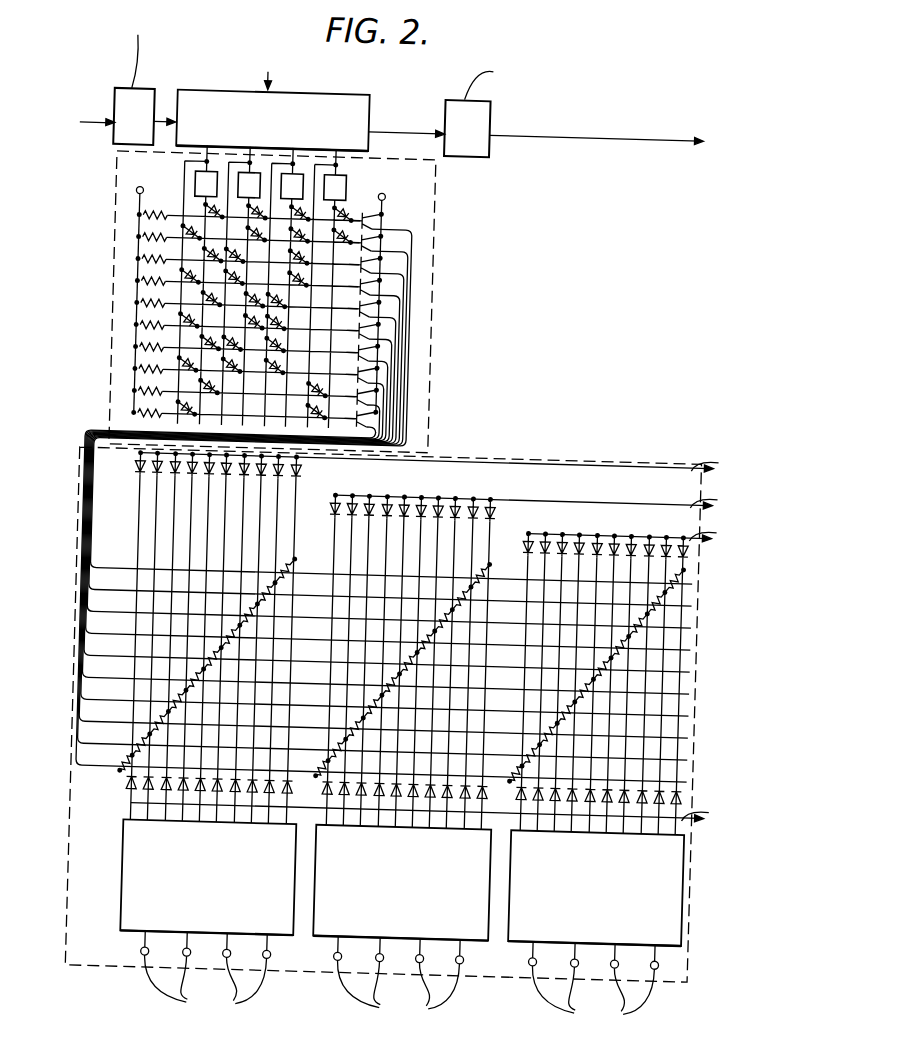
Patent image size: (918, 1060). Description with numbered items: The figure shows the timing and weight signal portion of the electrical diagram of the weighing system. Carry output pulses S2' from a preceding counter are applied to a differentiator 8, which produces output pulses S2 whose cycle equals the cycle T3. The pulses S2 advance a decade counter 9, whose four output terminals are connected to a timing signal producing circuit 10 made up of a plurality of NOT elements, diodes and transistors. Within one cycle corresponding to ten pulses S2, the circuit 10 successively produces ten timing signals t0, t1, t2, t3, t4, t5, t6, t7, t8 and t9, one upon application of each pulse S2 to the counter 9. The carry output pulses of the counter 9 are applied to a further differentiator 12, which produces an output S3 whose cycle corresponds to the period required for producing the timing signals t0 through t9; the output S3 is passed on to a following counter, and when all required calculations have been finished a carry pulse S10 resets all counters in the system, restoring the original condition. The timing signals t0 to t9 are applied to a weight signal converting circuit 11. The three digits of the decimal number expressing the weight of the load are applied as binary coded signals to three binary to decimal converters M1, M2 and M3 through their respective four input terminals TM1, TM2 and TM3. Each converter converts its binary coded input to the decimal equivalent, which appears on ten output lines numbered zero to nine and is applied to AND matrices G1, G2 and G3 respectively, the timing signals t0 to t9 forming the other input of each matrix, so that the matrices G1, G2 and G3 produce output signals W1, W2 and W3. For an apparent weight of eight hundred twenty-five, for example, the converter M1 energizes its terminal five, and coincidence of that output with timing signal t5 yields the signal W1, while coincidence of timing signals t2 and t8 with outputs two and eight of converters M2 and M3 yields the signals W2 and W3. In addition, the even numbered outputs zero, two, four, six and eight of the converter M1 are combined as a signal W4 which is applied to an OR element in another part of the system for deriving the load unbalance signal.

The differentiator 8 is at (102, 152).
The decade counter 9 is at (352, 95).
The timing signal producing circuit 10 is at (417, 205).
The weight signal converting circuit 11 is at (109, 976).
The differentiator 12 is at (470, 155).
The output pulses S2 is at (167, 97).
The carry output pulses S2' is at (85, 103).
The carry output pulse S10 is at (255, 76).
The output pulses S3 is at (652, 134).
The timing signal t0 is at (387, 231).
The timing signal t1 is at (387, 253).
The timing signal t2 is at (387, 275).
The timing signal t3 is at (387, 297).
The timing signal t4 is at (387, 319).
The timing signal t5 is at (387, 341).
The timing signal t6 is at (387, 363).
The timing signal t7 is at (387, 385).
The timing signal t8 is at (387, 407).
The timing signal t9 is at (387, 429).
The output signal W1 is at (440, 468).
The output signal W2 is at (537, 509).
The output signal W3 is at (633, 544).
The signal W4 is at (437, 815).
The AND matrix G1 is at (147, 585).
The AND matrix G2 is at (340, 587).
The AND matrix G3 is at (533, 583).
The binary to decimal converter M1 is at (131, 911).
The binary to decimal converter M2 is at (322, 939).
The binary to decimal converter M3 is at (517, 939).
The input terminals TM1 is at (205, 976).
The input terminals TM2 is at (398, 981).
The input terminals TM3 is at (593, 987).